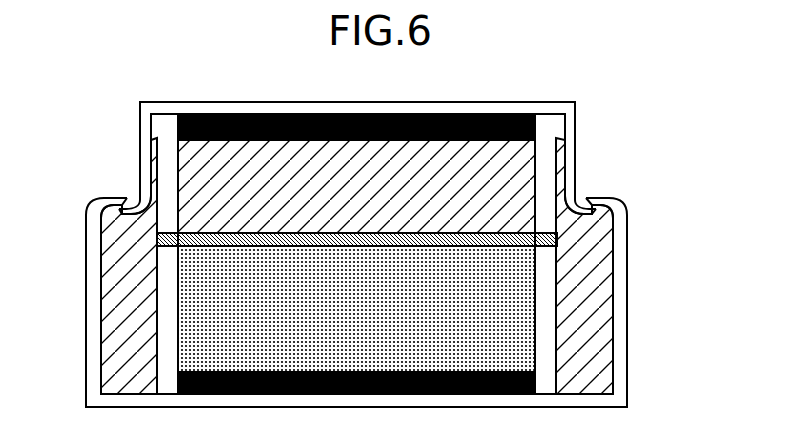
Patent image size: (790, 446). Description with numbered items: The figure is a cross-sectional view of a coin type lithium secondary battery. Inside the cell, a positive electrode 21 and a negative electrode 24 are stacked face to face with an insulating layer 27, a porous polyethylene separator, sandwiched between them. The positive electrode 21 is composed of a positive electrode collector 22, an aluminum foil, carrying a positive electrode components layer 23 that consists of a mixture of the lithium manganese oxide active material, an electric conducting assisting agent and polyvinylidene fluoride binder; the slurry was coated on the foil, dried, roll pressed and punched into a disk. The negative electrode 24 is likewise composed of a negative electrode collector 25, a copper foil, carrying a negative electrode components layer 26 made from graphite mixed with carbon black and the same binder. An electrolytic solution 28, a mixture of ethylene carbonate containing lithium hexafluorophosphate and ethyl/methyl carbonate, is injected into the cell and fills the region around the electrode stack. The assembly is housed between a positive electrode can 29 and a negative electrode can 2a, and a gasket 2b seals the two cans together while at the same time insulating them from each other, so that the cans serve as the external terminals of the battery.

The negative electrode can 2a is at (140, 124).
The gasket 2b is at (105, 236).
The positive electrode 21 is at (681, 321).
The positive electrode collector 22 is at (535, 380).
The positive electrode components layer 23 is at (535, 341).
The negative electrode 24 is at (681, 104).
The negative electrode collector 25 is at (535, 126).
The negative electrode components layer 26 is at (535, 163).
The insulating layer 27 is at (552, 238).
The electrolytic solution 28 is at (167, 302).
The positive electrode can 29 is at (93, 388).